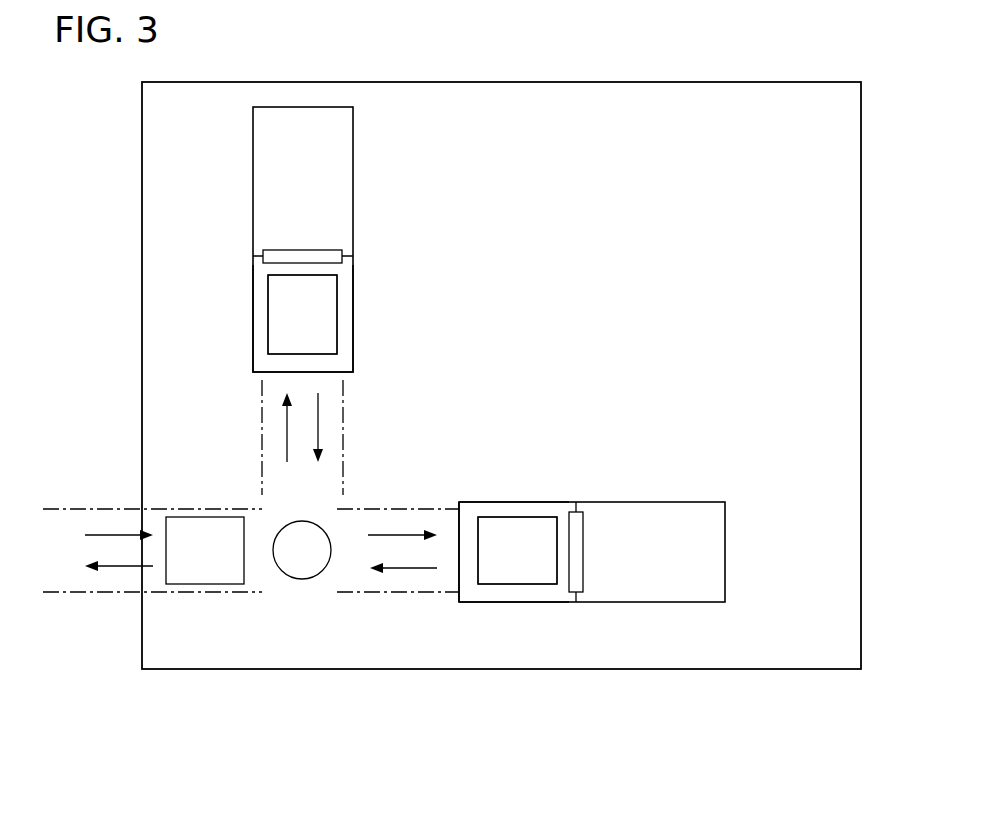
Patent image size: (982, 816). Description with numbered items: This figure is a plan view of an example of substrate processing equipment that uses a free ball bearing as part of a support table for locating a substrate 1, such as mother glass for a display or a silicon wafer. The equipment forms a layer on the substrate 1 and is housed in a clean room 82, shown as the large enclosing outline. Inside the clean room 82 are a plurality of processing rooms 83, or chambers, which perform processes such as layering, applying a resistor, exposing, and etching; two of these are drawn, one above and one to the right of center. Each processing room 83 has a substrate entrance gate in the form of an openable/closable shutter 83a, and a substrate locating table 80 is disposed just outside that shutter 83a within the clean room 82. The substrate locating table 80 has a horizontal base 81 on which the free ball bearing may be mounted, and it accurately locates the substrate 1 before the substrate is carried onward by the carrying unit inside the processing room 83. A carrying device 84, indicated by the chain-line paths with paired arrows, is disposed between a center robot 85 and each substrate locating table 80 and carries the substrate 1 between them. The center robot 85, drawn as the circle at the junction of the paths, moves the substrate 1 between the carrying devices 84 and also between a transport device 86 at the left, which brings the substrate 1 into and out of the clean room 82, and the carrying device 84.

The substrate 1 is at (337, 333).
The substrate locating table 80 is at (353, 313).
The horizontal base 81 is at (343, 290).
The clean room 82 is at (806, 670).
The processing room 83 is at (368, 178).
The openable/closable shutter 83a is at (321, 250).
The carrying device 84 is at (343, 429).
The center robot 85 is at (302, 580).
The transport device 86 is at (100, 594).